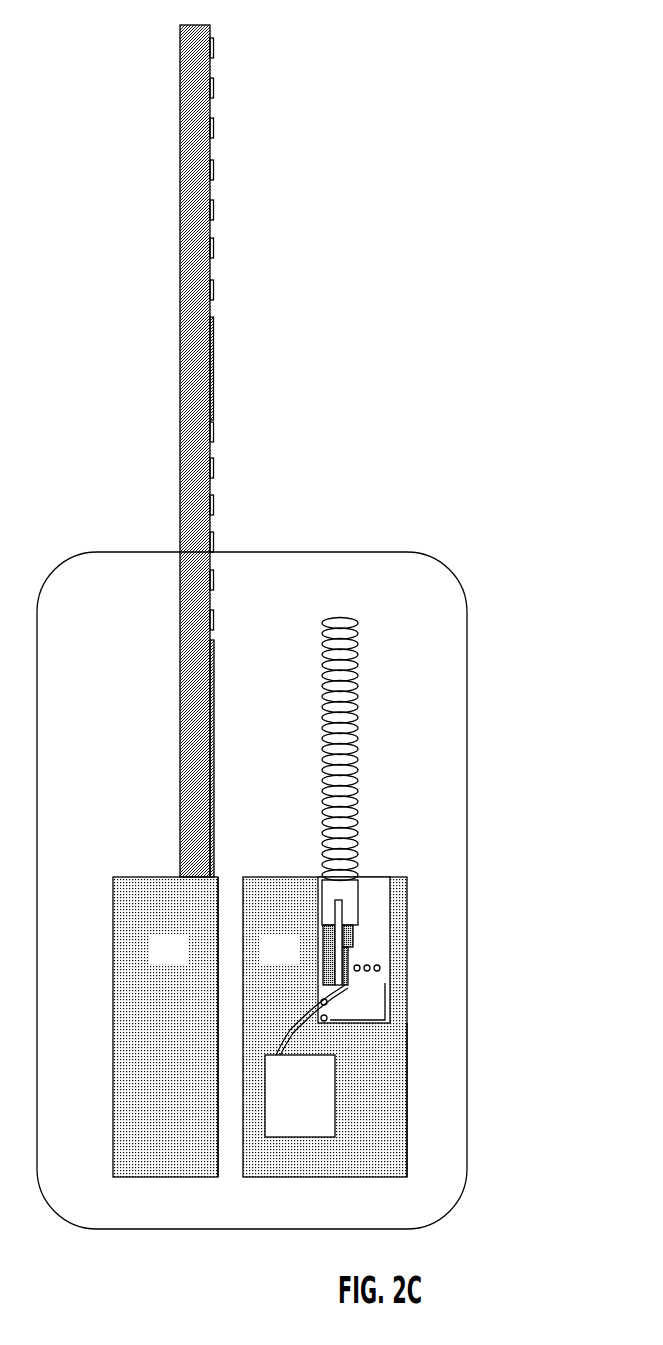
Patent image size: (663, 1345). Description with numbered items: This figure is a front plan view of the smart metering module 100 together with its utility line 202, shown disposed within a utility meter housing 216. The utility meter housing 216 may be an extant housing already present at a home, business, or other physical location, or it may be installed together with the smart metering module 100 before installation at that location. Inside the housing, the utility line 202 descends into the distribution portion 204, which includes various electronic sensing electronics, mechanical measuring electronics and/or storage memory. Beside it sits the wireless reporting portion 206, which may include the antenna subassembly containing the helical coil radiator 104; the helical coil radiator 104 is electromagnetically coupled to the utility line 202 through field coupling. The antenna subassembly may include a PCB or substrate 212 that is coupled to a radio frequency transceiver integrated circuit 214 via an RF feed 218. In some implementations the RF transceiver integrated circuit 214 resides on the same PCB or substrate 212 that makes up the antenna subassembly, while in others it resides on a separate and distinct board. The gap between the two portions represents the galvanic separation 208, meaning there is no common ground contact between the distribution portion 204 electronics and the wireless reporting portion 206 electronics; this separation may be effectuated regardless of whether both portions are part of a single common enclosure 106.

The smart metering module 100 is at (288, 656).
The utility line 202 is at (214, 393).
The utility meter housing 216 is at (467, 675).
The helical coil radiator 104 is at (358, 778).
The distribution portion 204 is at (183, 962).
The wireless reporting portion 206 is at (294, 962).
The PCB or substrate 212 is at (380, 947).
The RF feed 218 is at (292, 1046).
The enclosure 106 is at (407, 1071).
The RF transceiver integrated circuit 214 is at (336, 1103).
The galvanic separation 208 is at (230, 1163).